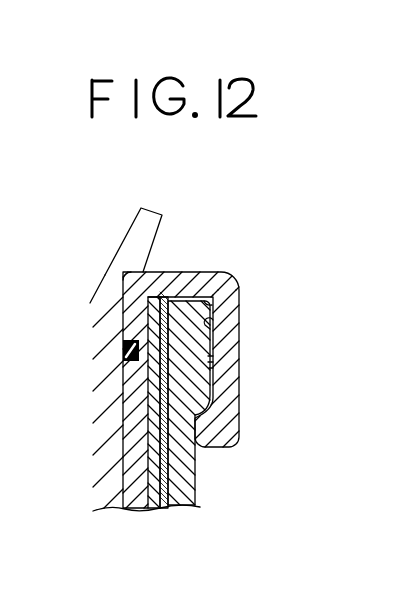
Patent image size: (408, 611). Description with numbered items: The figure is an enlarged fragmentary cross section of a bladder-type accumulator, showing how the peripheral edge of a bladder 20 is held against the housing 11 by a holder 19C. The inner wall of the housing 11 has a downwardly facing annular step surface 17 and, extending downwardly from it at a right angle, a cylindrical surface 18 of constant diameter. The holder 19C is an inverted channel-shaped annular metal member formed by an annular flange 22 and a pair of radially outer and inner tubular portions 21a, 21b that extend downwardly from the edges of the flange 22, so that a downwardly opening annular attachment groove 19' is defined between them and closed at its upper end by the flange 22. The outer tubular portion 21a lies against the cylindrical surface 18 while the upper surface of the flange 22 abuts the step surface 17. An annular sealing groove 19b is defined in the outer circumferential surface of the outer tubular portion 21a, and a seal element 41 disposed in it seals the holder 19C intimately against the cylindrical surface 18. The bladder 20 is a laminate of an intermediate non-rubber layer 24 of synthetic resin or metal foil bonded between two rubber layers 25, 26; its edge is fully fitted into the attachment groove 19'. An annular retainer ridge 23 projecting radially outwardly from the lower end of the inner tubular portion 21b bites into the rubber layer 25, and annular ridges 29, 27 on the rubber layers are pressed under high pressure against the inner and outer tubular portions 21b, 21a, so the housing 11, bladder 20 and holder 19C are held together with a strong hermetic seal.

The housing 11 is at (114, 244).
The annular step surface 17 is at (120, 274).
The cylindrical surface 18 is at (146, 397).
The annular sealing groove 19b is at (123, 348).
The holder 19C is at (218, 272).
The annular attachment groove 19' is at (233, 403).
The bladder 20 is at (196, 474).
The outer tubular portion 21a is at (123, 300).
The inner tubular portion 21b is at (222, 297).
The annular flange 22 is at (186, 270).
The annular retainer ridge 23 is at (218, 427).
The intermediate non-rubber layer 24 is at (166, 510).
The rubber layer 25 is at (190, 508).
The rubber layer 26 is at (140, 511).
The annular ridge 27 is at (124, 434).
The annular ridge 29 is at (213, 362).
The seal element 41 is at (123, 363).